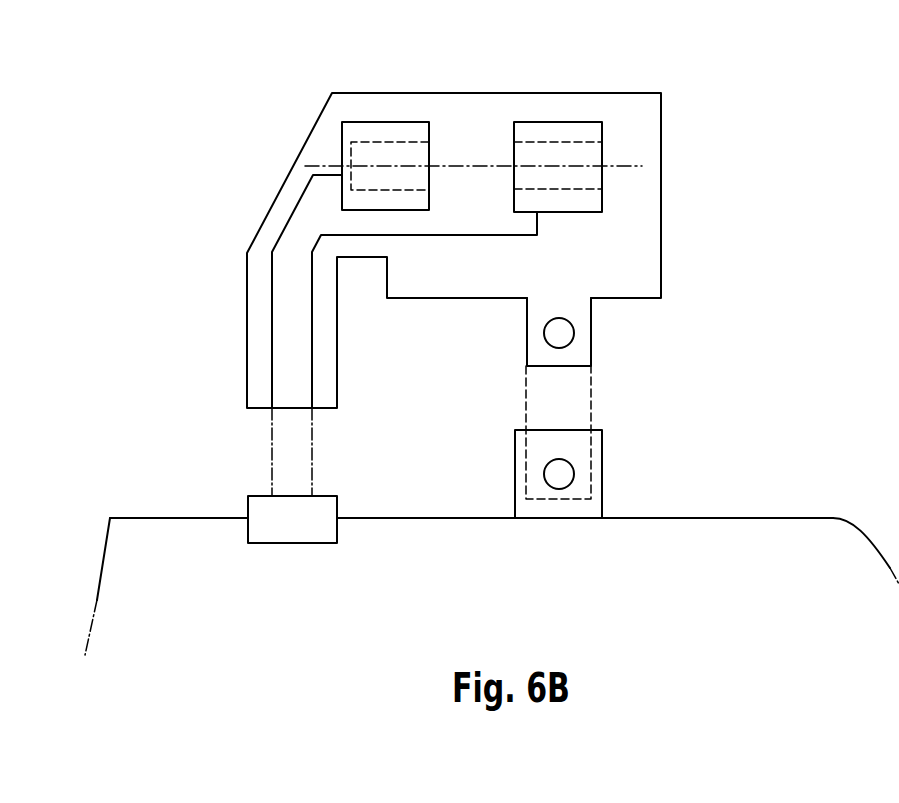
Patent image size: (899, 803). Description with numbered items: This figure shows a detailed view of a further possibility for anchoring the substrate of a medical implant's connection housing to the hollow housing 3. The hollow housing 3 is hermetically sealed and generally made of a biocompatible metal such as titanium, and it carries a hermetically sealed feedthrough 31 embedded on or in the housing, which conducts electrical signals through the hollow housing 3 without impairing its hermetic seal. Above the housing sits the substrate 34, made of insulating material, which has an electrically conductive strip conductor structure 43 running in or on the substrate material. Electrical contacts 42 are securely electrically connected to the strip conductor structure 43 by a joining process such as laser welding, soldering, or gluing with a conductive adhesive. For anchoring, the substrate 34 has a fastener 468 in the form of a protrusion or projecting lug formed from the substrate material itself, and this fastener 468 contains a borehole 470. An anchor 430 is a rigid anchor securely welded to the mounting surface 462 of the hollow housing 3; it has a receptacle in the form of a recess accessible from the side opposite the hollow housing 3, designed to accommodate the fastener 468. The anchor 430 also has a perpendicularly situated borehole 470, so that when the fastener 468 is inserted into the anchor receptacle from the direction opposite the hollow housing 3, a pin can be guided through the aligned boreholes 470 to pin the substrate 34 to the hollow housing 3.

The hollow housing 3 is at (494, 597).
The hermetically sealed feedthrough 31 is at (291, 527).
The substrate 34 is at (473, 108).
The electrical contact 42 is at (385, 122).
The strip conductor structure 43 is at (293, 213).
The anchor 430 is at (598, 470).
The mounting surface 462 is at (806, 511).
The fastener 468 is at (581, 314).
The borehole 470 is at (566, 335).